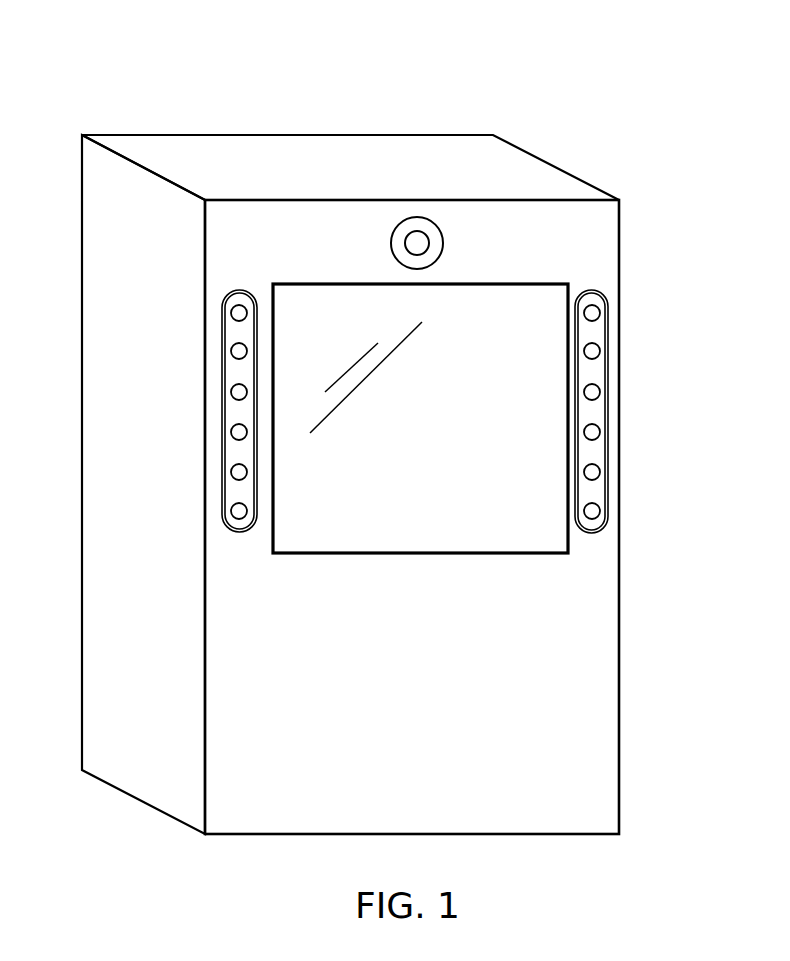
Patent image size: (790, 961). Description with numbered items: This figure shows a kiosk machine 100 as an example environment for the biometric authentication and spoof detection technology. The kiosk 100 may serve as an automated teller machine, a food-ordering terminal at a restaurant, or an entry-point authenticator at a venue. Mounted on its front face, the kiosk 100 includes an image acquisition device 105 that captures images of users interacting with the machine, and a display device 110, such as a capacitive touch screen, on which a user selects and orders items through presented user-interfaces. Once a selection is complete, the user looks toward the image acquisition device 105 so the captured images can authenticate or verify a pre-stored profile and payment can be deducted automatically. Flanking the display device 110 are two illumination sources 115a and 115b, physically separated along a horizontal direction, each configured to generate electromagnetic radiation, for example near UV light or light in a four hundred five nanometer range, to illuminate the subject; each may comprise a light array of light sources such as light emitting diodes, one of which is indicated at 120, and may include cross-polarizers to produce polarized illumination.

The kiosk machine 100 is at (100, 83).
The image acquisition device 105 is at (416, 231).
The display device 110 is at (347, 292).
The illumination source 115a is at (222, 460).
The illumination source 115b is at (608, 383).
The light element 120 is at (601, 512).